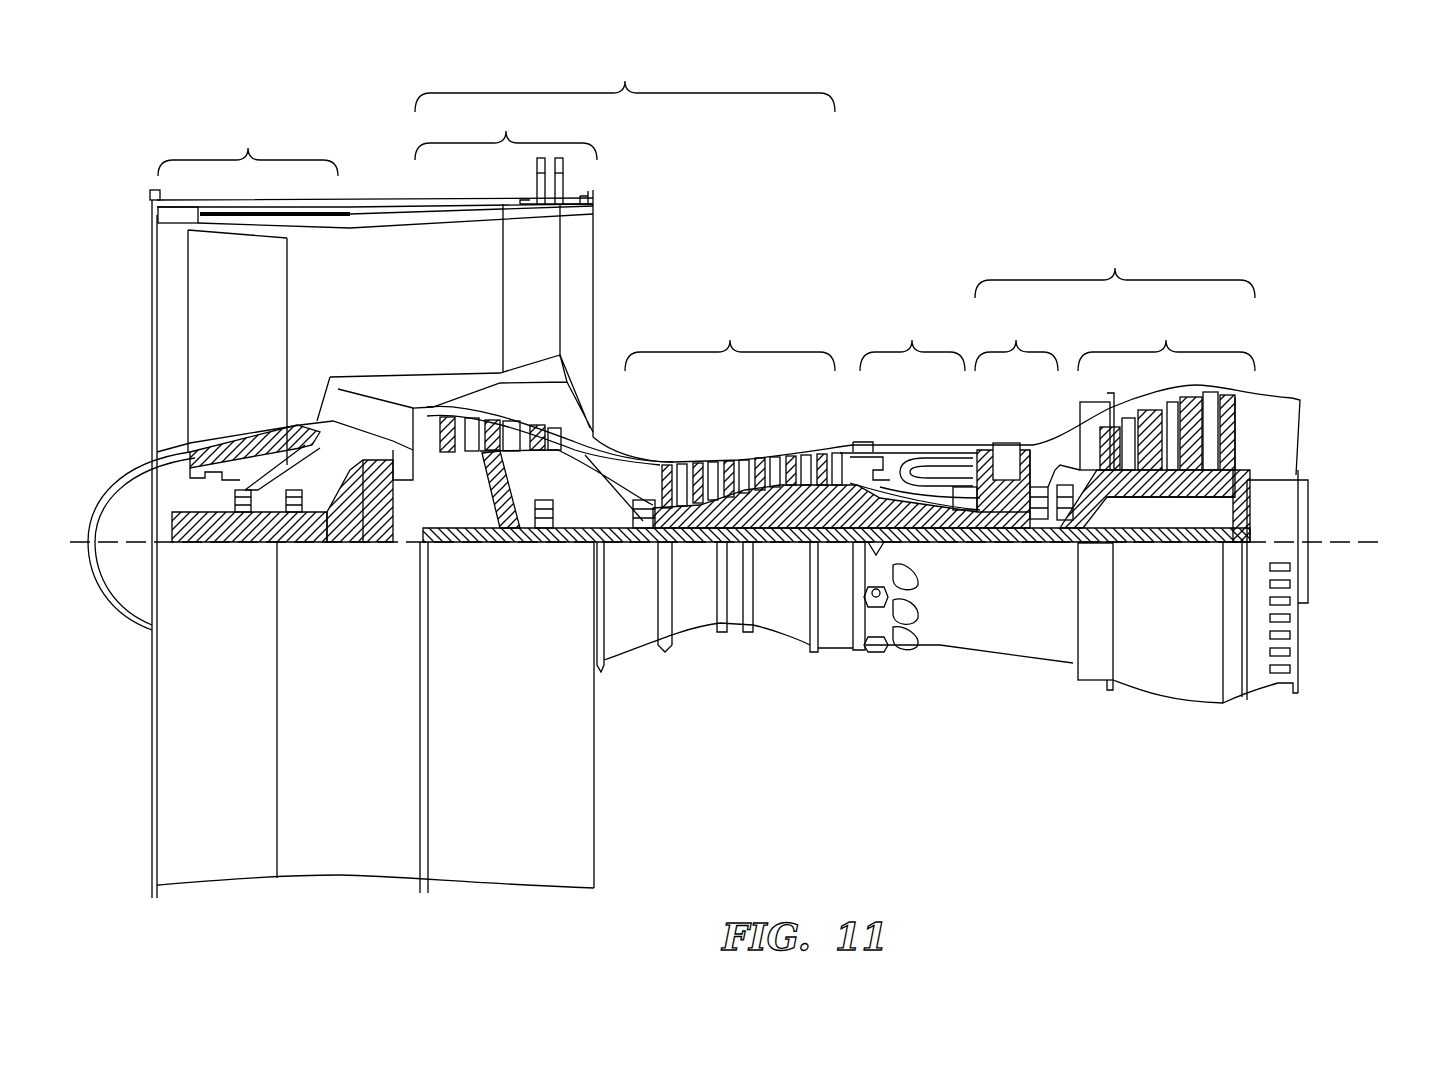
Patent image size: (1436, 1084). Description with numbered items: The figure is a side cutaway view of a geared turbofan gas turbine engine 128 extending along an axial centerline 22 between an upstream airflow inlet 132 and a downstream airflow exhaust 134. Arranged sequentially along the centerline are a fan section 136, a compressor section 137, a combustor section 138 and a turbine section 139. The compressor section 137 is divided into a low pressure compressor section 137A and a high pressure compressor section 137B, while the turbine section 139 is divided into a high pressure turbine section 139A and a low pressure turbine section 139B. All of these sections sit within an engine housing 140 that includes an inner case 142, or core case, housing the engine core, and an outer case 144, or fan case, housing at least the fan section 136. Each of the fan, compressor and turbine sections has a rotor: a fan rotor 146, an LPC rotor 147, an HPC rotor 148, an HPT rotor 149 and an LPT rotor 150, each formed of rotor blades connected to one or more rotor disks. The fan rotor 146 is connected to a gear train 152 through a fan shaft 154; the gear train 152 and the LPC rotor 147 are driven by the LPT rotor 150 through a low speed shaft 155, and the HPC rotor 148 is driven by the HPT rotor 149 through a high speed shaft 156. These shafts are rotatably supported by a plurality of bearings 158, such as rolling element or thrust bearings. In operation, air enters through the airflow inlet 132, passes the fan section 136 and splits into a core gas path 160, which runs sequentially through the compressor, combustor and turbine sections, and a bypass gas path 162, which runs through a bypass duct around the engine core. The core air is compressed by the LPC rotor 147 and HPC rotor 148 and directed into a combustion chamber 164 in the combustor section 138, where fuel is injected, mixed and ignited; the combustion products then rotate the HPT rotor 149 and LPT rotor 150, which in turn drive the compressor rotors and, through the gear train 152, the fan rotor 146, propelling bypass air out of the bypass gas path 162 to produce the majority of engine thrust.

The axial centerline 22 is at (1366, 555).
The geared turbine engine 128 is at (122, 182).
The airflow inlet 132 is at (152, 282).
The airflow exhaust 134 is at (1303, 428).
The fan section 136 is at (248, 145).
The compressor section 137 is at (625, 80).
The low pressure compressor section 137A is at (415, 282).
The high pressure compressor section 137B is at (807, 408).
The combustor section 138 is at (910, 409).
The turbine section 139 is at (1115, 263).
The high pressure turbine section 139A is at (1042, 398).
The low pressure turbine section 139B is at (1180, 425).
The engine housing 140 is at (626, 674).
The inner case 142 is at (836, 648).
The outer case 144 is at (545, 889).
The fan rotor 146 is at (192, 462).
The LPC rotor 147 is at (487, 492).
The HPC rotor 148 is at (780, 500).
The HPT rotor 149 is at (1004, 528).
The LPT rotor 150 is at (1157, 481).
The gear train 152 is at (373, 545).
The fan shaft 154 is at (232, 548).
The low speed shaft 155 is at (1170, 542).
The high speed shaft 156 is at (930, 522).
The bearings 158 is at (250, 545).
The core gas path 160 is at (620, 461).
The bypass gas path 162 is at (428, 311).
The combustion chamber 164 is at (920, 470).